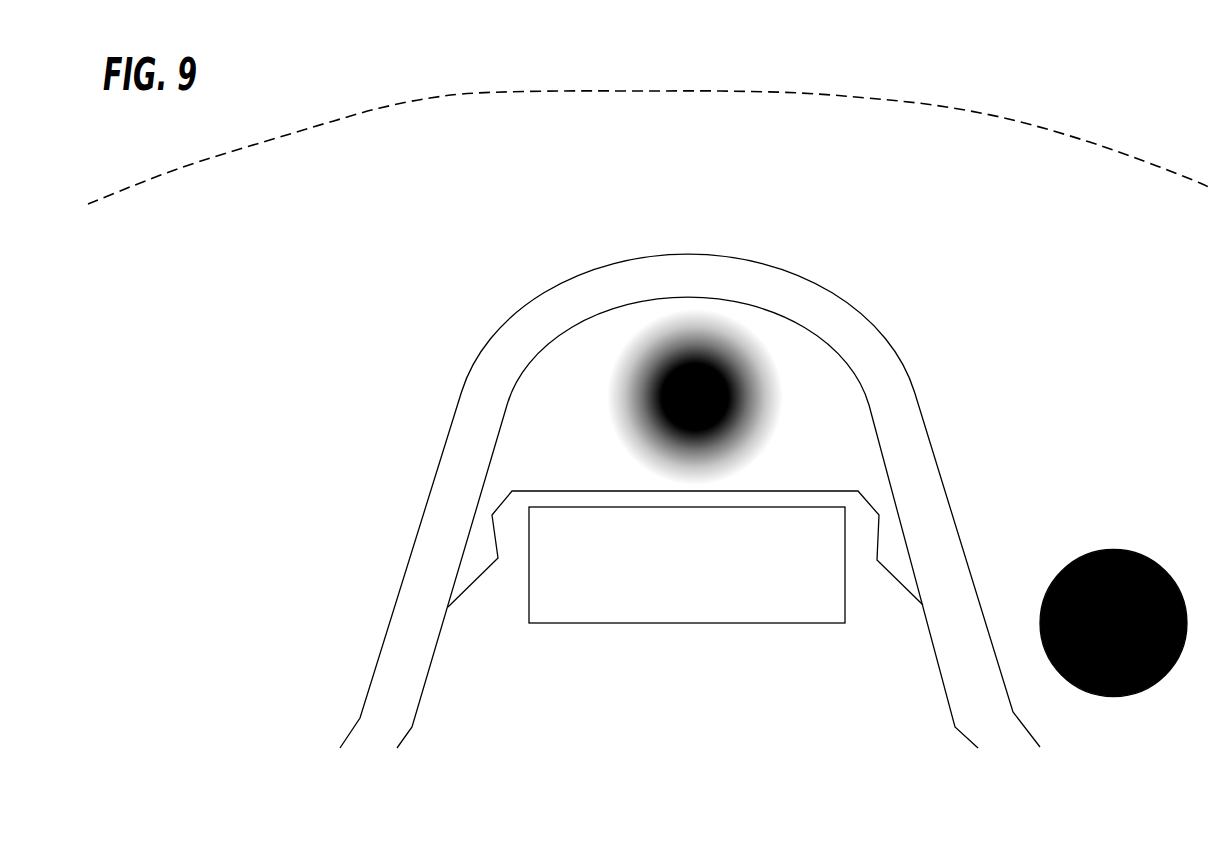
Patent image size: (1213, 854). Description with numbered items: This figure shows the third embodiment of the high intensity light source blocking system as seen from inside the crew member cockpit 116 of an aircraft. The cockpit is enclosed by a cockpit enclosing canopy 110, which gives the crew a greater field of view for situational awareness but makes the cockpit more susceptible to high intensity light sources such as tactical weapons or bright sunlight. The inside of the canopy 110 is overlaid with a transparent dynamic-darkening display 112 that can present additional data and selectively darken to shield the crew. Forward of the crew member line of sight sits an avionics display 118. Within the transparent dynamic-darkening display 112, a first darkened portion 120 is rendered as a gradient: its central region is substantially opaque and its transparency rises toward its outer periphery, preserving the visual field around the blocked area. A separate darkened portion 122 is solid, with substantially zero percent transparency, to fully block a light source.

The cockpit enclosing canopy 110 is at (650, 147).
The transparent dynamic-darkening display 112 is at (699, 166).
The crew member cockpit 116 is at (690, 501).
The avionics display 118 is at (685, 557).
The first darkened portion 120 is at (740, 408).
The darkened portion 122 is at (1073, 560).